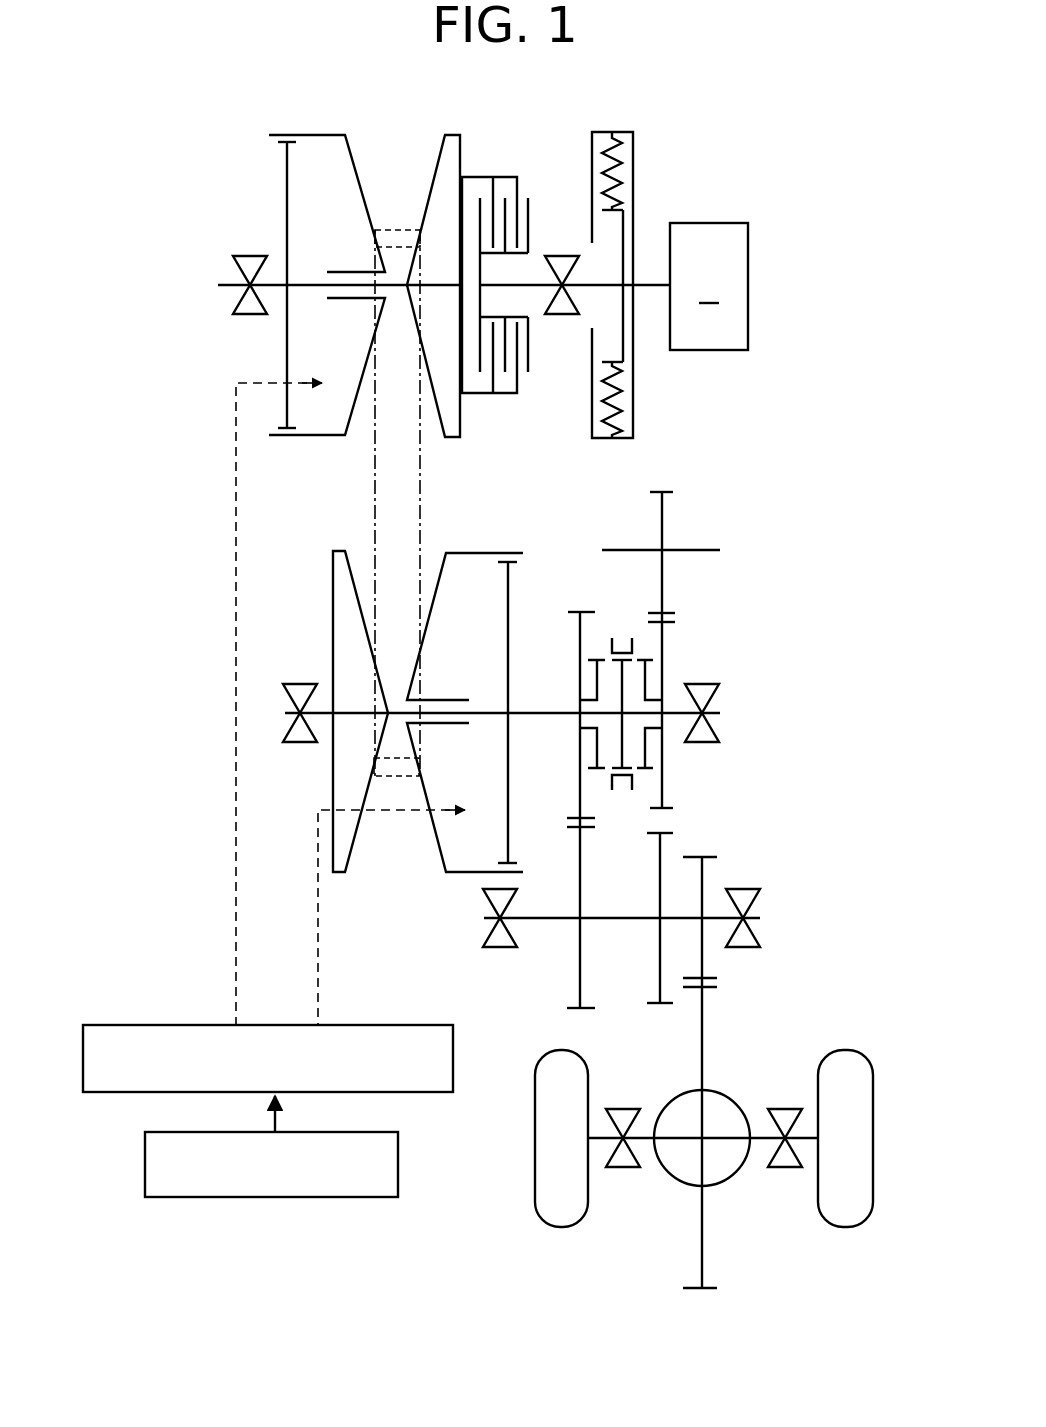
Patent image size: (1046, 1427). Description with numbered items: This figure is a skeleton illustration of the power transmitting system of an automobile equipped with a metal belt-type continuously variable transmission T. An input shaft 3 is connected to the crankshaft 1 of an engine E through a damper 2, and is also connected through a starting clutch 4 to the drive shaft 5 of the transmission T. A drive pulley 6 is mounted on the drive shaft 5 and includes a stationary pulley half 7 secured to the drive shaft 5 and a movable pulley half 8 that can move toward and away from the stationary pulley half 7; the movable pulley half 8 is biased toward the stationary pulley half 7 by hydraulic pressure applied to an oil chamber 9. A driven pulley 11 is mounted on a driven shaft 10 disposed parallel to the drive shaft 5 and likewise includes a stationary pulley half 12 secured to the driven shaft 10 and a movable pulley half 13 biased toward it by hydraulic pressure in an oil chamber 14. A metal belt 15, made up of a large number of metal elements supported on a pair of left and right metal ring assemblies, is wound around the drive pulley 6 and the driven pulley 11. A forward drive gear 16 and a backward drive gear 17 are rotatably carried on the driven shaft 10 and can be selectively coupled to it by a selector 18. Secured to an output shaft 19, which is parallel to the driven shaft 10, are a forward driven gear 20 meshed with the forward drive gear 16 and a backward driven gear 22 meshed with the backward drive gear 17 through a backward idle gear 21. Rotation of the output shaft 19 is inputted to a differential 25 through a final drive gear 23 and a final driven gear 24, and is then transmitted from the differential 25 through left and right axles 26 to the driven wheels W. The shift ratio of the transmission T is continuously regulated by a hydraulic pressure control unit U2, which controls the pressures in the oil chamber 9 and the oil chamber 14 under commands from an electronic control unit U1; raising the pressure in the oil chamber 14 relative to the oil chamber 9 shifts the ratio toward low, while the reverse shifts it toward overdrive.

The crankshaft 1 is at (648, 291).
The damper 2 is at (642, 174).
The input shaft 3 is at (583, 285).
The starting clutch 4 is at (507, 171).
The drive shaft 5 is at (303, 283).
The drive pulley 6 is at (364, 260).
The stationary pulley half 7 is at (445, 168).
The movable pulley half 8 is at (353, 168).
The oil chamber 9 is at (321, 357).
The driven shaft 10 is at (557, 713).
The driven pulley 11 is at (397, 746).
The stationary pulley half 12 is at (335, 588).
The movable pulley half 13 is at (442, 584).
The oil chamber 14 is at (470, 795).
The metal belt 15 is at (421, 505).
The forward drive gear 16 is at (574, 610).
The backward drive gear 17 is at (668, 623).
The selector 18 is at (618, 788).
The output shaft 19 is at (605, 917).
The forward driven gear 20 is at (590, 1012).
The backward idle gear 21 is at (672, 491).
The backward driven gear 22 is at (656, 1007).
The final drive gear 23 is at (708, 856).
The final driven gear 24 is at (712, 988).
The differential 25 is at (728, 1100).
The axles 26 is at (638, 1140).
The engine E is at (709, 286).
The metal belt-type continuously variable transmission T is at (323, 490).
The driven wheels W is at (535, 1192).
The electronic control unit U1 is at (398, 1153).
The hydraulic pressure control unit U2 is at (403, 1025).